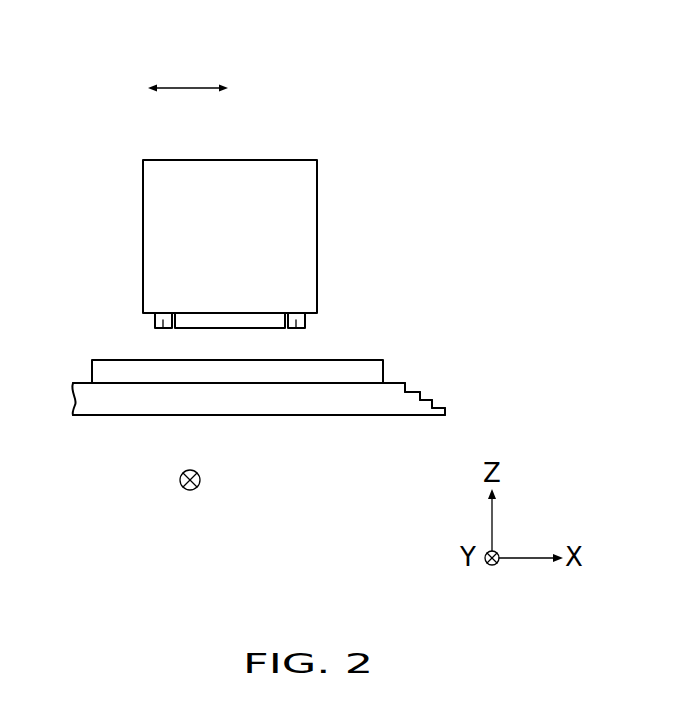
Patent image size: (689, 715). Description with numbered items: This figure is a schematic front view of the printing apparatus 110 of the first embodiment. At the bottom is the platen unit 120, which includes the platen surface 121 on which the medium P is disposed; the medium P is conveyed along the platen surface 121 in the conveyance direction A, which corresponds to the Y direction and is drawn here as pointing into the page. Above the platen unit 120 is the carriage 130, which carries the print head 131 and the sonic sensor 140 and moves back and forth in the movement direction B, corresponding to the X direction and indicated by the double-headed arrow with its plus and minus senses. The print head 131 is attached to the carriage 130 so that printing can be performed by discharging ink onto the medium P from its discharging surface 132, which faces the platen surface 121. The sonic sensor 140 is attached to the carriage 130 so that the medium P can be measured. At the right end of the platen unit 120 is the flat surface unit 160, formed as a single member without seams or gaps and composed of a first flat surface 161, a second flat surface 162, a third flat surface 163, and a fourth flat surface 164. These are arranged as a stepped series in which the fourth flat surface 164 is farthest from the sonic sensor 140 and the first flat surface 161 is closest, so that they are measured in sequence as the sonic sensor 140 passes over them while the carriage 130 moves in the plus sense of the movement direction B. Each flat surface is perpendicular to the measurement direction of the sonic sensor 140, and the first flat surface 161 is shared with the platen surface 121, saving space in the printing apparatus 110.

The printing apparatus 110 is at (401, 84).
The platen unit 120 is at (461, 311).
The platen surface 121 is at (390, 380).
The carriage 130 is at (231, 168).
The print head 131 is at (270, 320).
The discharging surface 132 is at (300, 347).
The sonic sensor 140 is at (300, 347).
The flat surface unit 160 is at (496, 395).
The first flat surface 161 is at (404, 382).
The second flat surface 162 is at (414, 399).
The third flat surface 163 is at (428, 407).
The fourth flat surface 164 is at (483, 426).
The medium P is at (366, 359).
The conveyance direction A is at (190, 464).
The movement direction B is at (188, 88).